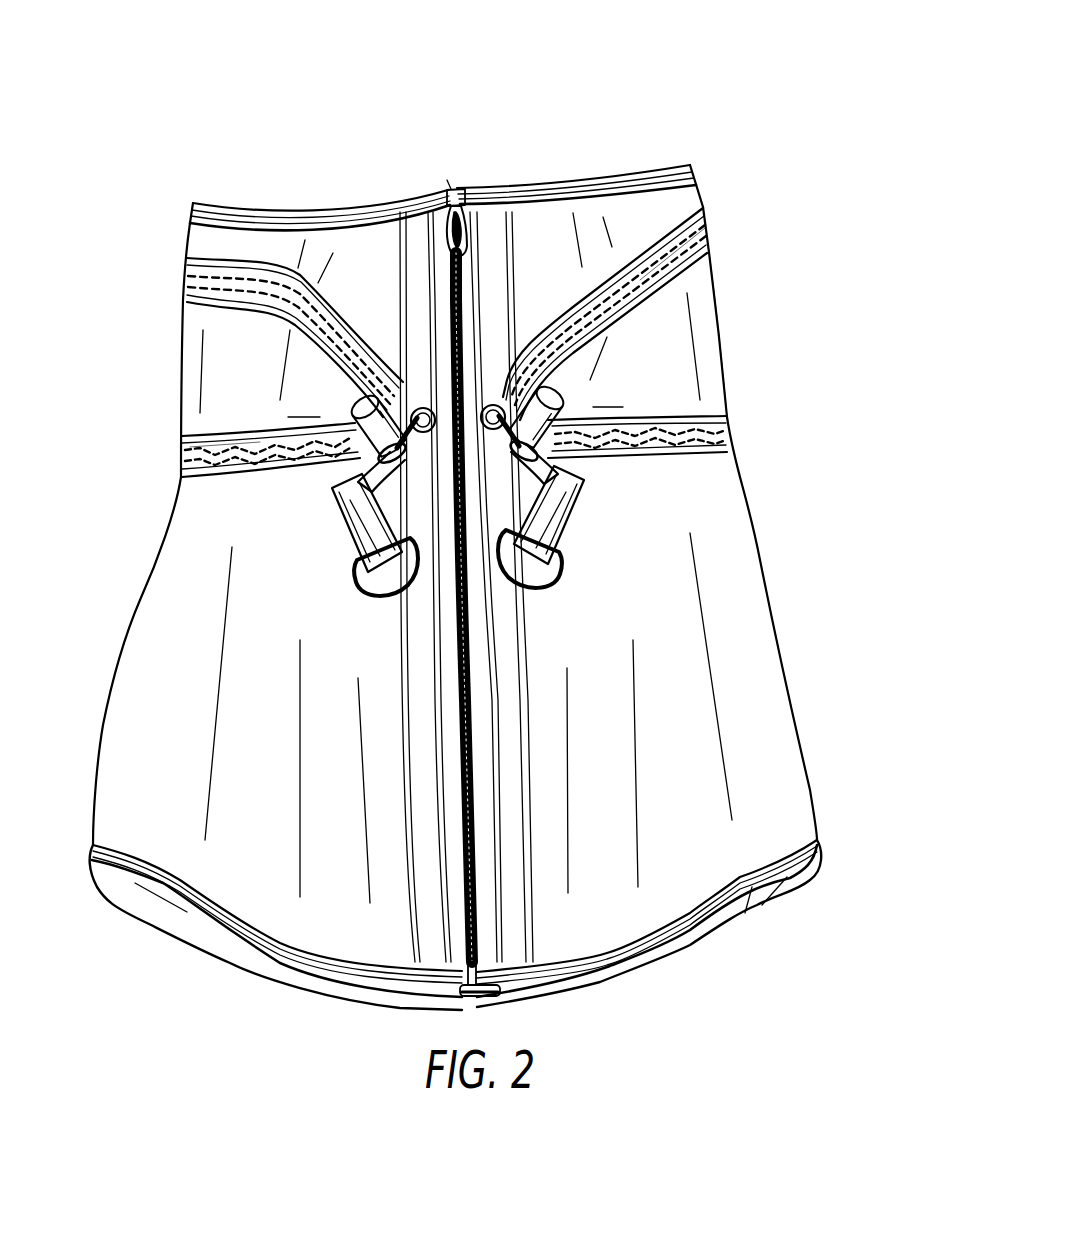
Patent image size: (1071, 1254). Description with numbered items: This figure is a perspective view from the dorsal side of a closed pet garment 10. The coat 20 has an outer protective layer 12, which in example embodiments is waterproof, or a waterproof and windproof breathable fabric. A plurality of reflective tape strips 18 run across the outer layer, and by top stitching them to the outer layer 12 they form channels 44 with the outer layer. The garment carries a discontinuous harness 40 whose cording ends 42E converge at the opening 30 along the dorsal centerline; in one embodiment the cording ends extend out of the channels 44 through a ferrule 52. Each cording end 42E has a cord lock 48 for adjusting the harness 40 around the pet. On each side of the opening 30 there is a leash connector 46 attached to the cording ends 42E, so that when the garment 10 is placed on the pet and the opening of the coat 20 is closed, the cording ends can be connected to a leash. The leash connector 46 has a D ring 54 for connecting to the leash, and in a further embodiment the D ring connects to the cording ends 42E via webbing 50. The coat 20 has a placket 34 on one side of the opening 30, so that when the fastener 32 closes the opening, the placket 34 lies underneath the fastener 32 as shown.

The pet garment 10 is at (713, 101).
The outer protective layer 12 is at (658, 527).
The reflective tape strips 18 is at (706, 230).
The coat 20 is at (122, 733).
The opening 30 is at (453, 189).
The fastener 32 is at (478, 926).
The placket 34 is at (483, 996).
The harness 40 is at (187, 283).
The cording ends 42E is at (348, 490).
The channels 44 is at (722, 430).
The leash connector 46 is at (378, 590).
The cord lock 48 is at (548, 386).
The webbing 50 is at (585, 490).
The ferrule 52 is at (498, 405).
The D ring 54 is at (545, 582).